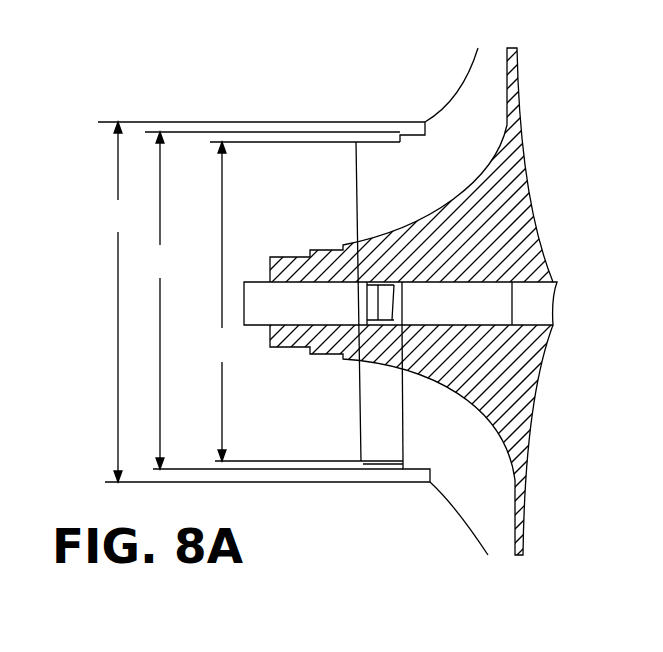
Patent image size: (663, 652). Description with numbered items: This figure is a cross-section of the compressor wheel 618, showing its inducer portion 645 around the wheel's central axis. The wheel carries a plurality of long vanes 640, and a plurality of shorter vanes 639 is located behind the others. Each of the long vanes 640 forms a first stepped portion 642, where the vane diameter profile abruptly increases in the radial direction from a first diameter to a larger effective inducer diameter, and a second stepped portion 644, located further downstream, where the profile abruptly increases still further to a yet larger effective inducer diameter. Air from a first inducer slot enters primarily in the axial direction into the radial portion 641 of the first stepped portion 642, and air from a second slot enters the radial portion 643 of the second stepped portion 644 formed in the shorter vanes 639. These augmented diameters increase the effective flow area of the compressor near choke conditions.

The inducer portion 645 is at (163, 50).
The radial portion 641 is at (363, 141).
The radial portion 643 is at (417, 132).
The long vanes 640 is at (452, 189).
The compressor wheel 618 is at (485, 317).
The shorter vanes 639 is at (478, 453).
The first stepped portion 642 is at (378, 474).
The second stepped portion 644 is at (420, 479).